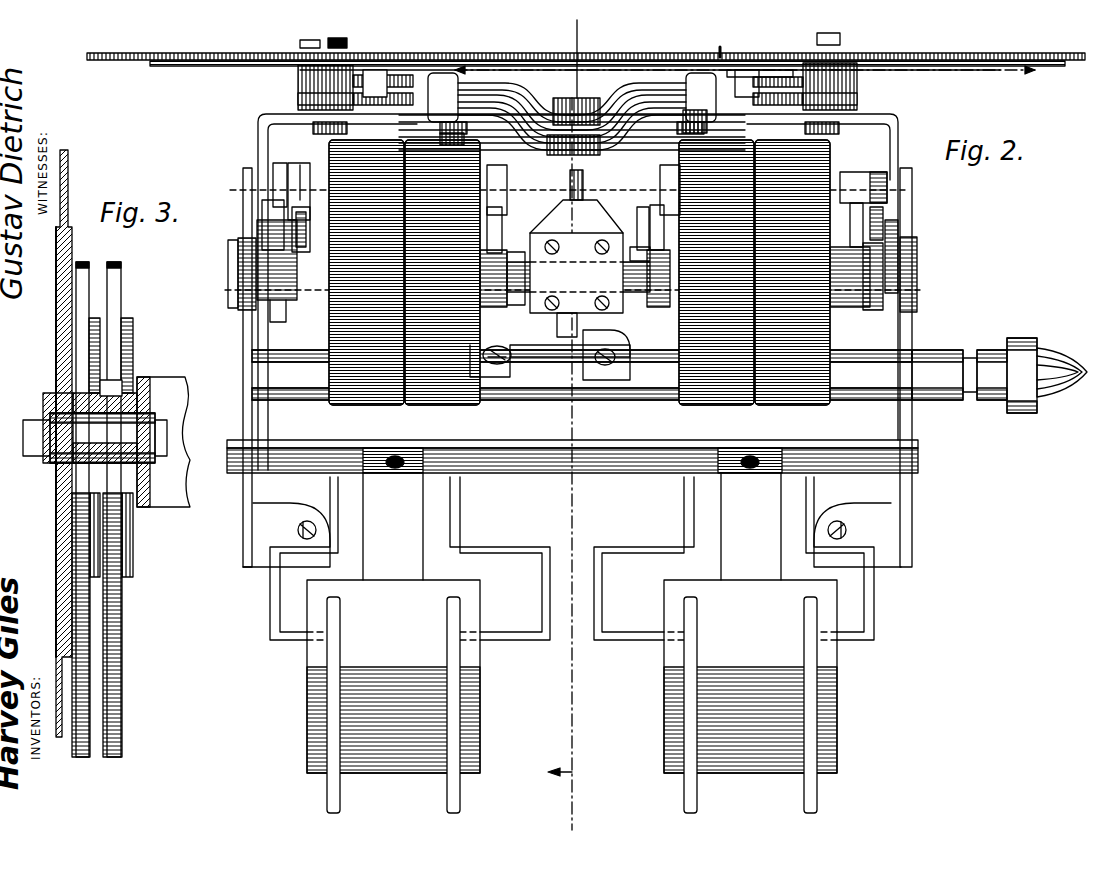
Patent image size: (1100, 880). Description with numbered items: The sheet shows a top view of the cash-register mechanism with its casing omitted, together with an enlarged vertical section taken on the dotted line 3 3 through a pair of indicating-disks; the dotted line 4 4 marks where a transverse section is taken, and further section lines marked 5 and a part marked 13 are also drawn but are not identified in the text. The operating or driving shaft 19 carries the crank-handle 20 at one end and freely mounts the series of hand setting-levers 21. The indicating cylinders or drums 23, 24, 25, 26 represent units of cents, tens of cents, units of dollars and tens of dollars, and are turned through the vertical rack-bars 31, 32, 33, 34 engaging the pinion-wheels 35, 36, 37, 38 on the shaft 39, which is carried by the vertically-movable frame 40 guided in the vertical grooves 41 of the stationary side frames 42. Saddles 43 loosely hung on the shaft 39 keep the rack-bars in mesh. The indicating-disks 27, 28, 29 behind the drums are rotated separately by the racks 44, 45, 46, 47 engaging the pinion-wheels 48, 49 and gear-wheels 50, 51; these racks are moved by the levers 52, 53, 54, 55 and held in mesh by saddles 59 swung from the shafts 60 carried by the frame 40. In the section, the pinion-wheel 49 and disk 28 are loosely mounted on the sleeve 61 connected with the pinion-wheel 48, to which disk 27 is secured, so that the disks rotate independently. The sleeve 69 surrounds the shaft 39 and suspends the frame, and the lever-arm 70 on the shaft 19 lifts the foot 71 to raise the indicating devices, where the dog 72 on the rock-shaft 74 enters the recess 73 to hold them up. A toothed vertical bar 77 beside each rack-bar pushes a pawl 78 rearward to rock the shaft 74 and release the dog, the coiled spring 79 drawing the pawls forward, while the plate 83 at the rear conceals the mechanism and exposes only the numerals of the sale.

In FIG. 2, the dotted line 3 3 is at (299, 174).
In FIG. 2, the dotted line 4 4 is at (745, 72).
In FIG. 2, the section line 5 is at (569, 425).
In FIG. 2, the stop block 13 is at (336, 35).
In FIG. 2, the operating or driving shaft 19 is at (945, 403).
In FIG. 2, the operating crank-handle 20 is at (1022, 413).
In FIG. 2, the hand setting-levers 21 is at (276, 643).
In FIG. 2, the units-of-cents indicating cylinder or drum 23 is at (792, 282).
In FIG. 2, the tens-of-cents indicating cylinder or drum 24 is at (716, 282).
In FIG. 2, the units-of-dollars indicating cylinder or drum 25 is at (442, 282).
In FIG. 2, the tens-of-dollars indicating cylinder or drum 26 is at (366, 282).
In FIG. 3, the units-of-cents indicating-disk 27 is at (56, 327).
In FIG. 2, the tens-of-cents indicating-disk 28 is at (118, 61).
In FIG. 3, the tens-of-cents indicating-disk 28 is at (70, 175).
In FIG. 2, the units-of-dollars indicating-disk 29 is at (1070, 66).
In FIG. 2, the rack-bar 31 is at (870, 255).
In FIG. 2, the rack-bar 32 is at (650, 253).
In FIG. 2, the rack-bar 33 is at (478, 254).
In FIG. 2, the rack-bar 34 is at (262, 235).
In FIG. 2, the pinion-wheel 35 is at (860, 310).
In FIG. 2, the pinion-wheel 36 is at (657, 307).
In FIG. 2, the pinion-wheel 37 is at (512, 305).
In FIG. 2, the pinion-wheel 38 is at (305, 302).
In FIG. 2, the shaft 39 is at (238, 270).
In FIG. 2, the vertically-movable frame 40 is at (258, 120).
In FIG. 3, the vertically-movable frame 40 is at (163, 442).
In FIG. 2, the vertical grooves 41 is at (230, 292).
In FIG. 2, the stationary main supporting side frames 42 is at (243, 338).
In FIG. 2, the saddles 43 is at (290, 170).
In FIG. 2, the rack 44 is at (405, 92).
In FIG. 3, the rack 44 is at (121, 295).
In FIG. 2, the rack 45 is at (358, 72).
In FIG. 3, the rack 45 is at (83, 268).
In FIG. 2, the rack 46 is at (700, 72).
In FIG. 2, the rack 47 is at (722, 60).
In FIG. 2, the pinion-wheel 48 is at (298, 100).
In FIG. 3, the pinion-wheel 48 is at (120, 385).
In FIG. 2, the pinion-wheel 49 is at (298, 77).
In FIG. 3, the pinion-wheel 49 is at (56, 395).
In FIG. 2, the gear-wheel 50 is at (857, 77).
In FIG. 2, the gear-wheel 51 is at (857, 98).
In FIG. 2, the lever 52 is at (588, 109).
In FIG. 2, the lever 53 is at (545, 106).
In FIG. 2, the lever 54 is at (625, 110).
In FIG. 2, the lever 55 is at (680, 95).
In FIG. 2, the saddles 59 is at (380, 72).
In FIG. 3, the saddles 59 is at (133, 548).
In FIG. 2, the shafts or studs 60 is at (328, 36).
In FIG. 3, the shafts or studs 60 is at (83, 438).
In FIG. 3, the sleeve 61 is at (84, 426).
In FIG. 2, the sleeve 69 is at (600, 258).
In FIG. 2, the lever-arm 70 is at (557, 327).
In FIG. 2, the foot 71 is at (524, 245).
In FIG. 2, the dog 72 is at (583, 185).
In FIG. 2, the recess 73 is at (576, 256).
In FIG. 2, the rock-shaft 74 is at (888, 178).
In FIG. 2, the toothed vertical bar 77 is at (292, 215).
In FIG. 2, the pawls 78 is at (273, 163).
In FIG. 2, the coiled spring 79 is at (280, 322).
In FIG. 2, the plate 83 is at (652, 52).